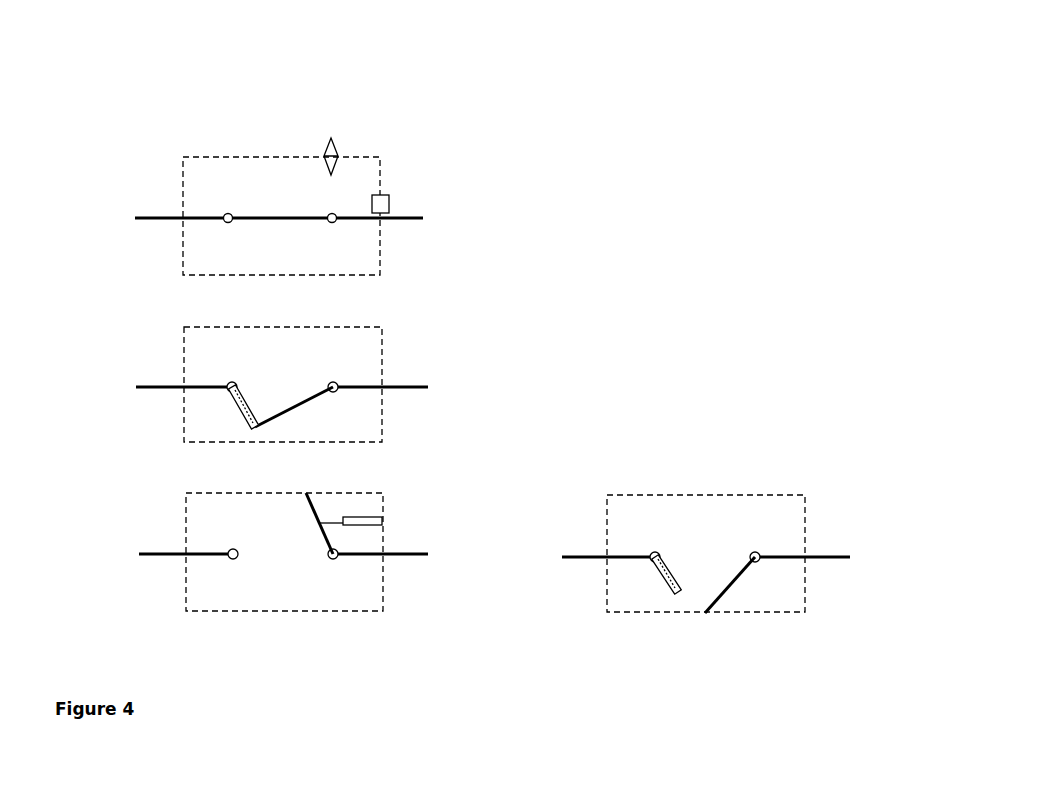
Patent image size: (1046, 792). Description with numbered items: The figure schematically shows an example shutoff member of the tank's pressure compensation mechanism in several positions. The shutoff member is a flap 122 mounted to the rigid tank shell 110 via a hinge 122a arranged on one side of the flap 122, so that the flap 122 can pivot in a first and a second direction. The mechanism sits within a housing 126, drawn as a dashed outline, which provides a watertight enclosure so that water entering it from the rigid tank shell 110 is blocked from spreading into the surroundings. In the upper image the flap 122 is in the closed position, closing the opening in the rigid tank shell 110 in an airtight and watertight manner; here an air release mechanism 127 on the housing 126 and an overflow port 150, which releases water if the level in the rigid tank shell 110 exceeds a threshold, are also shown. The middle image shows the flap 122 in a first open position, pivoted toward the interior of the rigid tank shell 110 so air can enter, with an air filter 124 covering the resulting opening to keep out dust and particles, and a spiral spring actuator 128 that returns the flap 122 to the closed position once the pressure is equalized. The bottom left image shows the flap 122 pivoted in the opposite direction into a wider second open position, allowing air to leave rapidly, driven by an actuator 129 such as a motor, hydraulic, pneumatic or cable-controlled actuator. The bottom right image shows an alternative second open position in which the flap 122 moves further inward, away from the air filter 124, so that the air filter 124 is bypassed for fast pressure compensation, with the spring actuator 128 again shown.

The rigid tank shell 110 is at (414, 215).
The flap 122 is at (296, 215).
The hinge 122a is at (340, 222).
The air filter 124 is at (245, 409).
The housing 126 is at (183, 175).
The air release mechanism 127 is at (331, 137).
The actuator 128 is at (355, 396).
The actuator 129 is at (382, 521).
The overflow port 150 is at (381, 195).